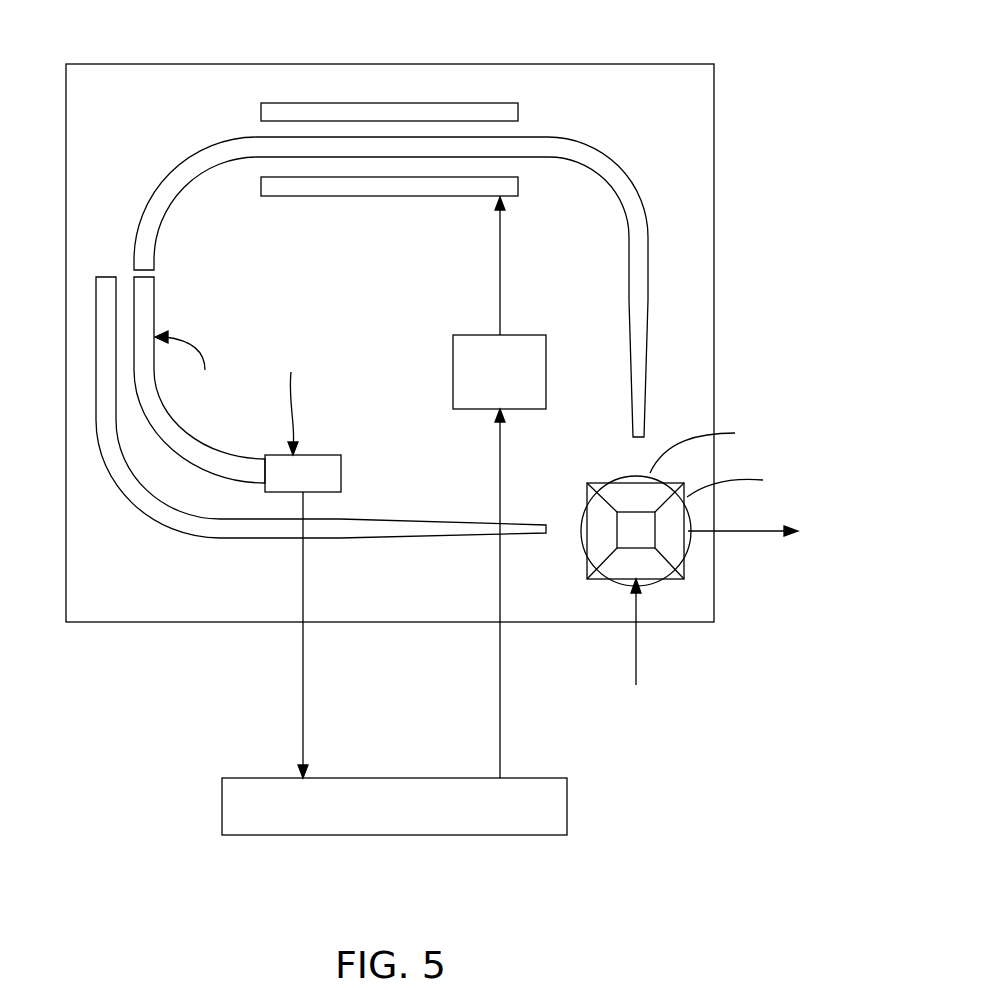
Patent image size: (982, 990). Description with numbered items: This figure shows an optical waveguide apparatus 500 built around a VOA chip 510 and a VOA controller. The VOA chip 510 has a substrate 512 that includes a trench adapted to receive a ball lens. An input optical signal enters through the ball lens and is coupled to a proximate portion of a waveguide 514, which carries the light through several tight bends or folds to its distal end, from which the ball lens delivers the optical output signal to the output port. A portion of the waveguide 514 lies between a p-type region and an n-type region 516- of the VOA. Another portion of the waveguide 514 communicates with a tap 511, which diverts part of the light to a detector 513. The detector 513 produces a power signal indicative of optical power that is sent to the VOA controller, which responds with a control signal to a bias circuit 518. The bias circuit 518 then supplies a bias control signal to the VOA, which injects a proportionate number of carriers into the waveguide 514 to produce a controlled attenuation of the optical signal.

The optical waveguide apparatus 500 is at (137, 722).
The VOA chip 510 is at (714, 143).
The tap 511 is at (155, 302).
The substrate 512 is at (672, 122).
The detector 513 is at (325, 455).
The waveguide 514 is at (188, 165).
The n-type region 516- is at (518, 186).
The bias circuit 518 is at (518, 335).